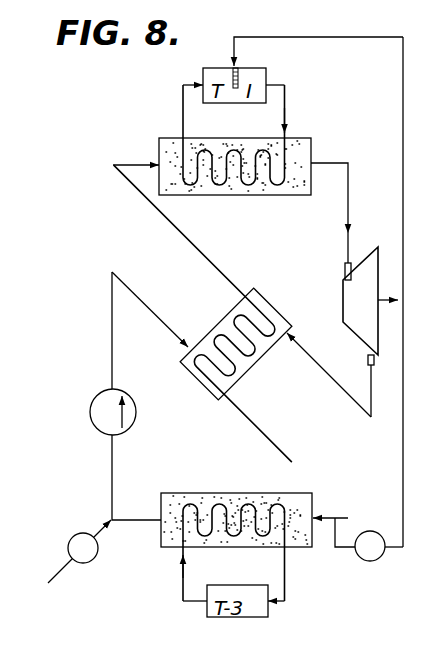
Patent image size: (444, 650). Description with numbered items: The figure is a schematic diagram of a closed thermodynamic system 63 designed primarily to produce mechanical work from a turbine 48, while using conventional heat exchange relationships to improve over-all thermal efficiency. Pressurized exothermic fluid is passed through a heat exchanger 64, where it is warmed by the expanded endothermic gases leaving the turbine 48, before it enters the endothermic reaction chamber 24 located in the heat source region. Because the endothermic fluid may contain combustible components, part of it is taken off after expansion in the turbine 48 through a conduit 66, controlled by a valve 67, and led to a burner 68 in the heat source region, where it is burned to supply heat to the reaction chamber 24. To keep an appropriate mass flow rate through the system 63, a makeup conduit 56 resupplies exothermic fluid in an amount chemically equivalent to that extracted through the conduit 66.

The endothermic reaction chamber 24 is at (247, 196).
The turbine 48 is at (370, 260).
The makeup conduit 56 is at (98, 550).
The system 63 is at (136, 130).
The heat exchanger 64 is at (267, 307).
The conduit 66 is at (404, 352).
The valve 67 is at (373, 560).
The burner 68 is at (238, 76).